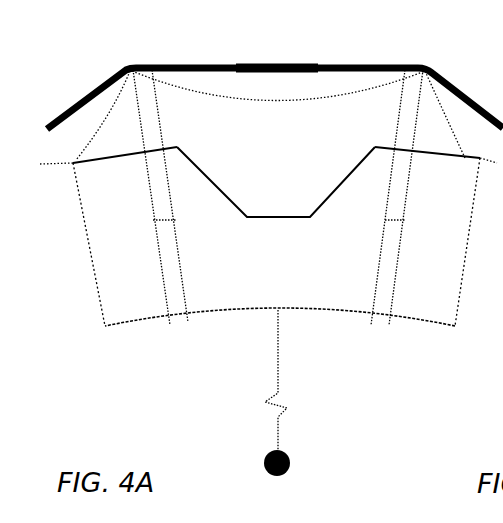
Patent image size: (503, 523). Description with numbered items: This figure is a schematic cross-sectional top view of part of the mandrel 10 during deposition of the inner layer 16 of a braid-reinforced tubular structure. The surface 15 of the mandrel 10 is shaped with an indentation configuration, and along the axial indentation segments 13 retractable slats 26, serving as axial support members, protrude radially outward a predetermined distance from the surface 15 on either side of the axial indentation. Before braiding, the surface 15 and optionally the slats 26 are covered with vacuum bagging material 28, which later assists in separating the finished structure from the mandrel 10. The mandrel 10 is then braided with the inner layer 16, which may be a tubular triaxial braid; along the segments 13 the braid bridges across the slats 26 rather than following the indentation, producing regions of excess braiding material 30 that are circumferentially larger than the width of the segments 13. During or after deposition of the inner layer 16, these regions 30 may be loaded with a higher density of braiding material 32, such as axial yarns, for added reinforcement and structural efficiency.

The mandrel 10 is at (136, 293).
The axial indentation segment 13 is at (227, 205).
The surface 15 is at (107, 155).
The inner layer 16 is at (447, 80).
The retractable slats 26 is at (148, 105).
The vacuum bagging material 28 is at (448, 133).
The regions of excess braiding material 30 is at (347, 67).
The higher density of braiding material 32 is at (263, 73).